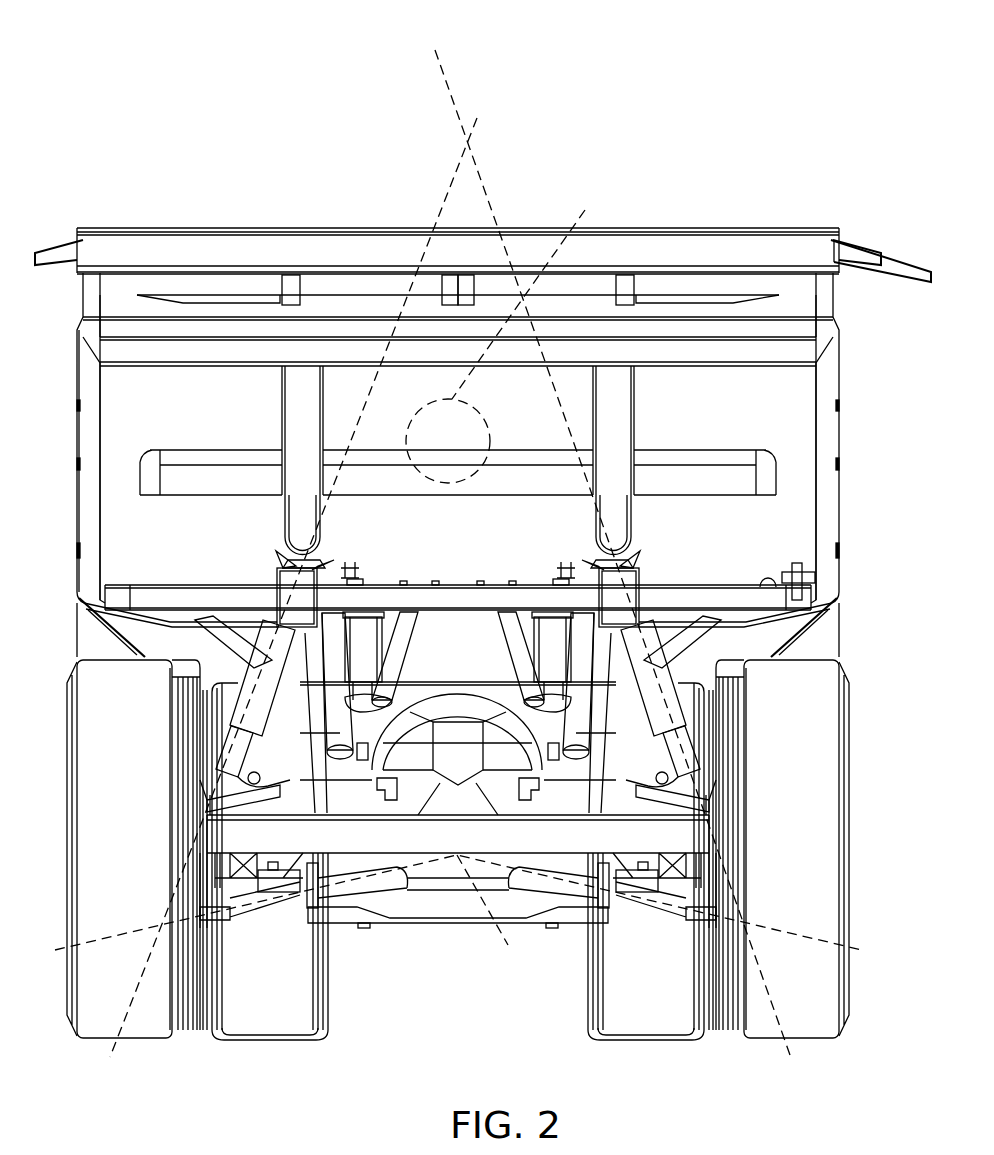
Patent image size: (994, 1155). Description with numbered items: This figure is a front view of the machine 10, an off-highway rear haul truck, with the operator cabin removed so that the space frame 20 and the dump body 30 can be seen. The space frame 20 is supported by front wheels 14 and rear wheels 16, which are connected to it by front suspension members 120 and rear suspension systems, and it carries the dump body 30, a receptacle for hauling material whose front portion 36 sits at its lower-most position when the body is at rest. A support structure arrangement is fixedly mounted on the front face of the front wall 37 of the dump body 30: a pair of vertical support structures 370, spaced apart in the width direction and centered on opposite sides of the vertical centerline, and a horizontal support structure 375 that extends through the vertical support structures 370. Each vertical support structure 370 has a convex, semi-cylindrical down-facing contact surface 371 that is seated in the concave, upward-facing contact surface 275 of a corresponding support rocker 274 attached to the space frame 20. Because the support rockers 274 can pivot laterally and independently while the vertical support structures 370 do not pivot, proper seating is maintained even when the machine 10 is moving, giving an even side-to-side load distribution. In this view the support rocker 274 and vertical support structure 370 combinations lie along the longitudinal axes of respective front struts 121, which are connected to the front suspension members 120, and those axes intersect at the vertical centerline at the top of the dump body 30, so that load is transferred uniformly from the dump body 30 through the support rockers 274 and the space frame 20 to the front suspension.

The machine 10 is at (124, 162).
The dump body 30 is at (864, 190).
The front portion 36 is at (858, 289).
The front wall 37 is at (105, 420).
The horizontal support structure 375 is at (222, 472).
The vertical support structures 370 is at (285, 506).
The down-facing contact surfaces 371 is at (302, 560).
The upward-facing contact surface 275 is at (290, 562).
The support rockers 274 is at (290, 560).
The front struts 121 is at (237, 707).
The front suspension members 120 is at (203, 800).
The front wheels 14 is at (100, 888).
The rear wheels 16 is at (275, 1012).
The space frame 20 is at (426, 956).